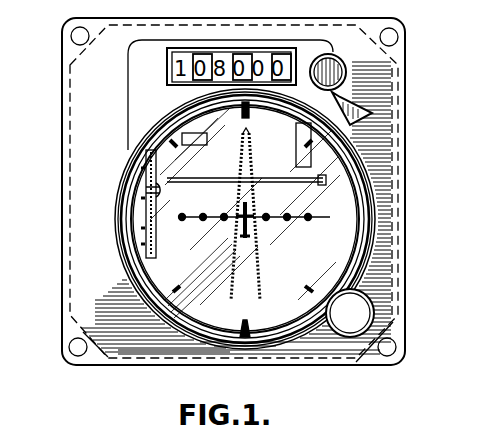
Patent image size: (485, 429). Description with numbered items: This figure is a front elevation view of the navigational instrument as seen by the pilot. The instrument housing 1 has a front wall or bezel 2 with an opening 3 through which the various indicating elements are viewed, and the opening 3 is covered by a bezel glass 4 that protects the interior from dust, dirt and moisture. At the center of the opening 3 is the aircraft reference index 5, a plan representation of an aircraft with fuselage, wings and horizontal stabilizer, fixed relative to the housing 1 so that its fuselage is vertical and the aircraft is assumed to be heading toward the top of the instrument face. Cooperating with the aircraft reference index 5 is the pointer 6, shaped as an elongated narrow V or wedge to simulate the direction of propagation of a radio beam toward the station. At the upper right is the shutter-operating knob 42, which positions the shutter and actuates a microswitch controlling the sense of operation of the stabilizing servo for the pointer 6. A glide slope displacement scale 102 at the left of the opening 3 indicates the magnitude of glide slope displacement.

The instrument housing 1 is at (70, 152).
The bezel 2 is at (82, 288).
The opening 3 is at (205, 312).
The bezel glass 4 is at (278, 305).
The aircraft reference index 5 is at (246, 238).
The pointer 6 is at (260, 281).
The shutter-operating knob 42 is at (350, 87).
The glide slope displacement scale 102 is at (152, 180).